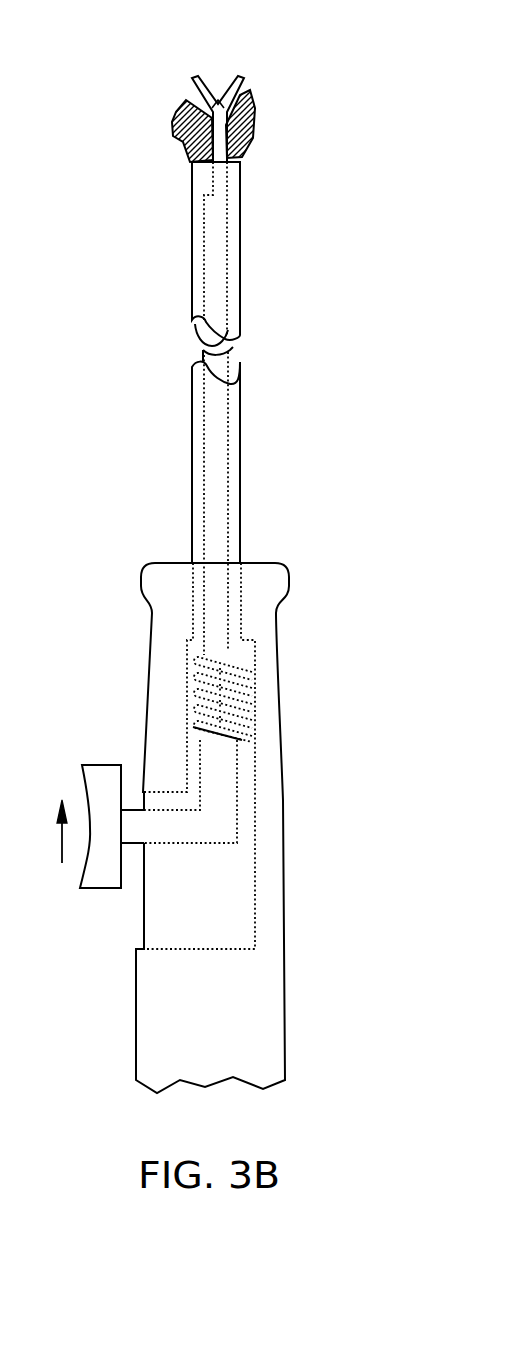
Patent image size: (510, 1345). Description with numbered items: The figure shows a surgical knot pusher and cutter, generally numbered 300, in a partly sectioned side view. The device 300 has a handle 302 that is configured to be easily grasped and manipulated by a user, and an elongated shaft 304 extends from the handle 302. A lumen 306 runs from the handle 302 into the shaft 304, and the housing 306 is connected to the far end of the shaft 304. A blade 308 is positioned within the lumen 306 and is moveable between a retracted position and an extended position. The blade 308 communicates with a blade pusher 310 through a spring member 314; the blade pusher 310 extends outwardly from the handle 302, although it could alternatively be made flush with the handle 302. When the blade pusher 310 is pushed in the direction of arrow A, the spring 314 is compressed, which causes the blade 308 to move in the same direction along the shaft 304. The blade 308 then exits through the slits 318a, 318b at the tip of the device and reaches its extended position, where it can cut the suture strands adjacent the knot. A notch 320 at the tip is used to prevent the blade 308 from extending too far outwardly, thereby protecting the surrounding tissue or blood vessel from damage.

The surgical knot pusher and cutter 300 is at (114, 546).
The handle 302 is at (285, 797).
The elongated shaft 304 is at (241, 458).
The lumen 306 is at (292, 107).
The blade 308 is at (218, 294).
The blade pusher 310 is at (108, 876).
The spring member 314 is at (238, 665).
The slit 318a is at (193, 100).
The slit 318b is at (236, 96).
The notch 320 is at (222, 108).